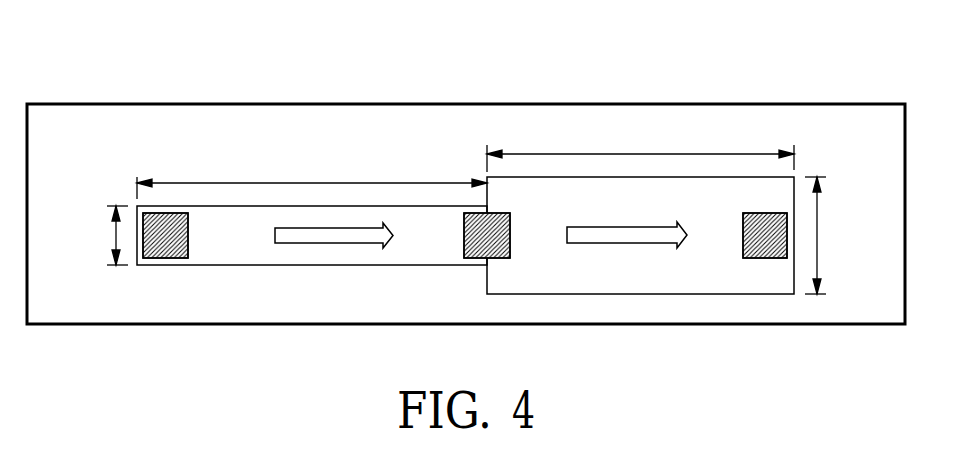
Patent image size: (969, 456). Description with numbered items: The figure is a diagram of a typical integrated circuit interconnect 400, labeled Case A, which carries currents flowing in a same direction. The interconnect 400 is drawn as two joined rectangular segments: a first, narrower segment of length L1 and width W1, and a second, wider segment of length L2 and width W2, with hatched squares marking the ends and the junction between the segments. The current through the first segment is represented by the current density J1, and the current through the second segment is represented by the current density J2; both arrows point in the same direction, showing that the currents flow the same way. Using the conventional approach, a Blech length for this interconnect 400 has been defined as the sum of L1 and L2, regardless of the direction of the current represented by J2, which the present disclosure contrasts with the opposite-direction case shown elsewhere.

The interconnect 400 is at (466, 167).
The first segment length L1 is at (312, 177).
The second segment length L2 is at (640, 149).
The first segment width W1 is at (104, 235).
The second segment width W2 is at (829, 235).
The first current density J1 is at (318, 237).
The second current density J2 is at (627, 224).